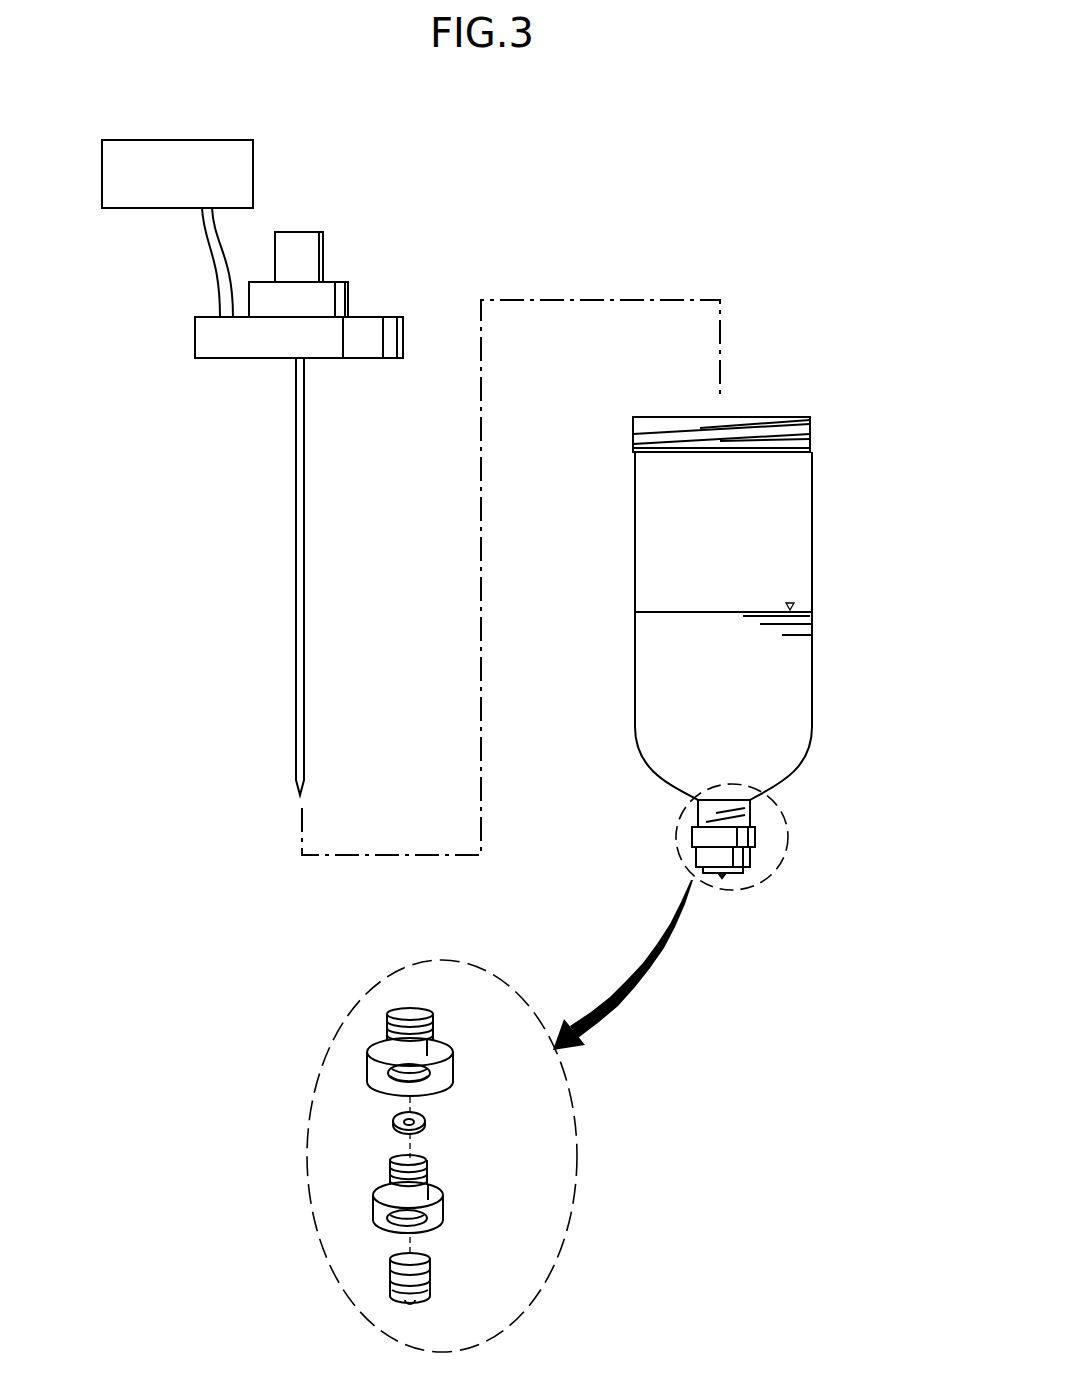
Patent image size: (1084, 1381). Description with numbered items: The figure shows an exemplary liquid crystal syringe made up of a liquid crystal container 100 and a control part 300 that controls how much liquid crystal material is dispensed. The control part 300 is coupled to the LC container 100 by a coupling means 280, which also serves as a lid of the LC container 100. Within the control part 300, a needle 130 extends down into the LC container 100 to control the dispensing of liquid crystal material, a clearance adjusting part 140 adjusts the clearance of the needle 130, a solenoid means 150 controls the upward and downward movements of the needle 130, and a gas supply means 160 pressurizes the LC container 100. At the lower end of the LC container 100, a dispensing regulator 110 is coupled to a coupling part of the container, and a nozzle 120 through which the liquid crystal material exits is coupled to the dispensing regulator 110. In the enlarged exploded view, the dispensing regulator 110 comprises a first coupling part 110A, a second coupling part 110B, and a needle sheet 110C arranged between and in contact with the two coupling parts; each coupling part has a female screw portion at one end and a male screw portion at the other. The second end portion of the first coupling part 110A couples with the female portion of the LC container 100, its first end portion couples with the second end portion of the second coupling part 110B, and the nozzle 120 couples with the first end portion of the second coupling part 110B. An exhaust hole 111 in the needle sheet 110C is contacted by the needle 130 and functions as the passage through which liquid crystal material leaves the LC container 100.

The liquid crystal container 100 is at (822, 402).
The dispensing regulator 110 is at (452, 1130).
The first coupling part 110A is at (433, 1055).
The second coupling part 110B is at (443, 1195).
The needle sheet 110C is at (421, 1123).
The exhaust hole 111 is at (394, 1123).
The nozzle 120 is at (430, 1270).
The needle 130 is at (302, 525).
The clearance adjusting part 140 is at (332, 296).
The solenoid means 150 is at (308, 250).
The gas supply means 160 is at (180, 140).
The coupling means 280 is at (222, 337).
The control part 300 is at (344, 196).